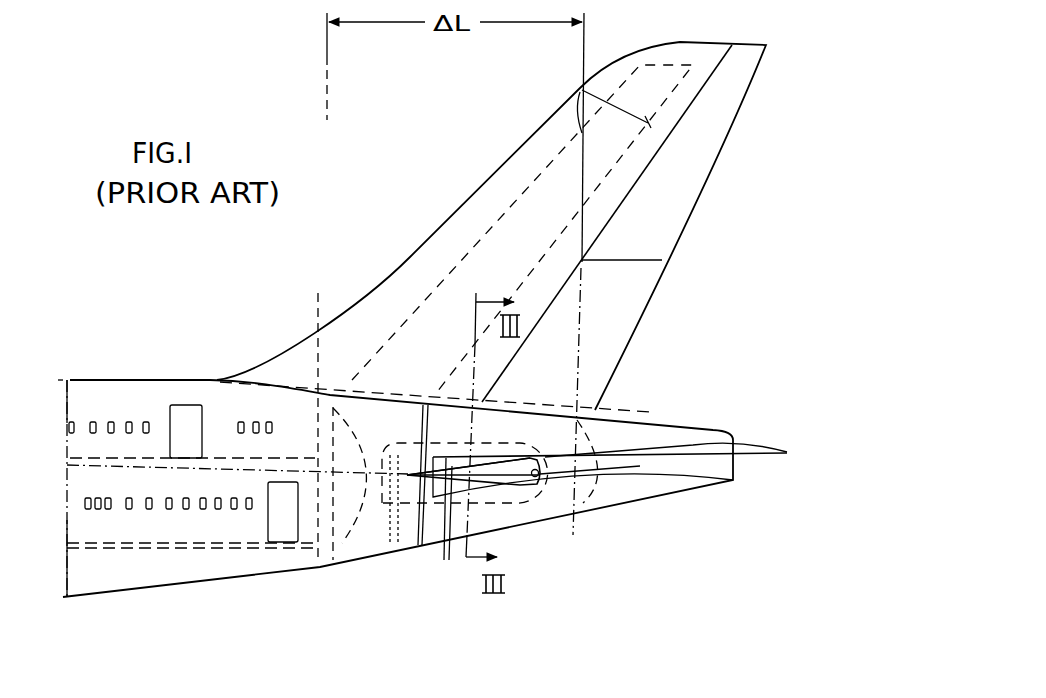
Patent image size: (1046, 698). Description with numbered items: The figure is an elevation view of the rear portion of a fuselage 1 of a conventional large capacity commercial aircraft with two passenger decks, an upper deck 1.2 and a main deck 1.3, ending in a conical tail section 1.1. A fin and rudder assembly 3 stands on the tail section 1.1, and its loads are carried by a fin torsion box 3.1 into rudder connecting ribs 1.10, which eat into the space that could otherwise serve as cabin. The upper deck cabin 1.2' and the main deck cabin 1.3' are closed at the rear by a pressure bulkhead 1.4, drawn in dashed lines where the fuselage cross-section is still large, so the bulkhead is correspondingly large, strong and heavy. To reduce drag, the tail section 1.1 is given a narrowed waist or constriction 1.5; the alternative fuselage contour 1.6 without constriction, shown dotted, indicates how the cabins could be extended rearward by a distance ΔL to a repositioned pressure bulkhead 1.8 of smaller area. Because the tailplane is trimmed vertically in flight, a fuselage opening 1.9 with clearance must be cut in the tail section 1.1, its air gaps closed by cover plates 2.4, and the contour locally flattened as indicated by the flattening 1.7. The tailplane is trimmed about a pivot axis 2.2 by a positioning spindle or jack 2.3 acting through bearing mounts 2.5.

The fuselage 1 is at (134, 380).
The tail section 1.1 is at (682, 344).
The upper deck 1.2 is at (192, 401).
The upper deck cabin 1.2' is at (88, 382).
The main deck 1.3 is at (190, 552).
The main deck cabin 1.3' is at (56, 558).
The pressure bulkhead 1.4 is at (343, 543).
The constriction 1.5 is at (452, 400).
The fuselage contour 1.6 is at (382, 388).
The flattening 1.7 is at (493, 503).
The repositioned pressure bulkhead 1.8 is at (588, 493).
The fuselage opening 1.9 is at (485, 450).
The rudder connecting ribs 1.10 is at (427, 427).
The pivot axis 2.2 is at (468, 466).
The positioning spindle or jack 2.3 is at (397, 543).
The cover plates 2.4 is at (445, 545).
The bearing mounts 2.5 is at (651, 405).
The fin and rudder assembly 3 is at (523, 167).
The fin torsion box 3.1 is at (580, 91).